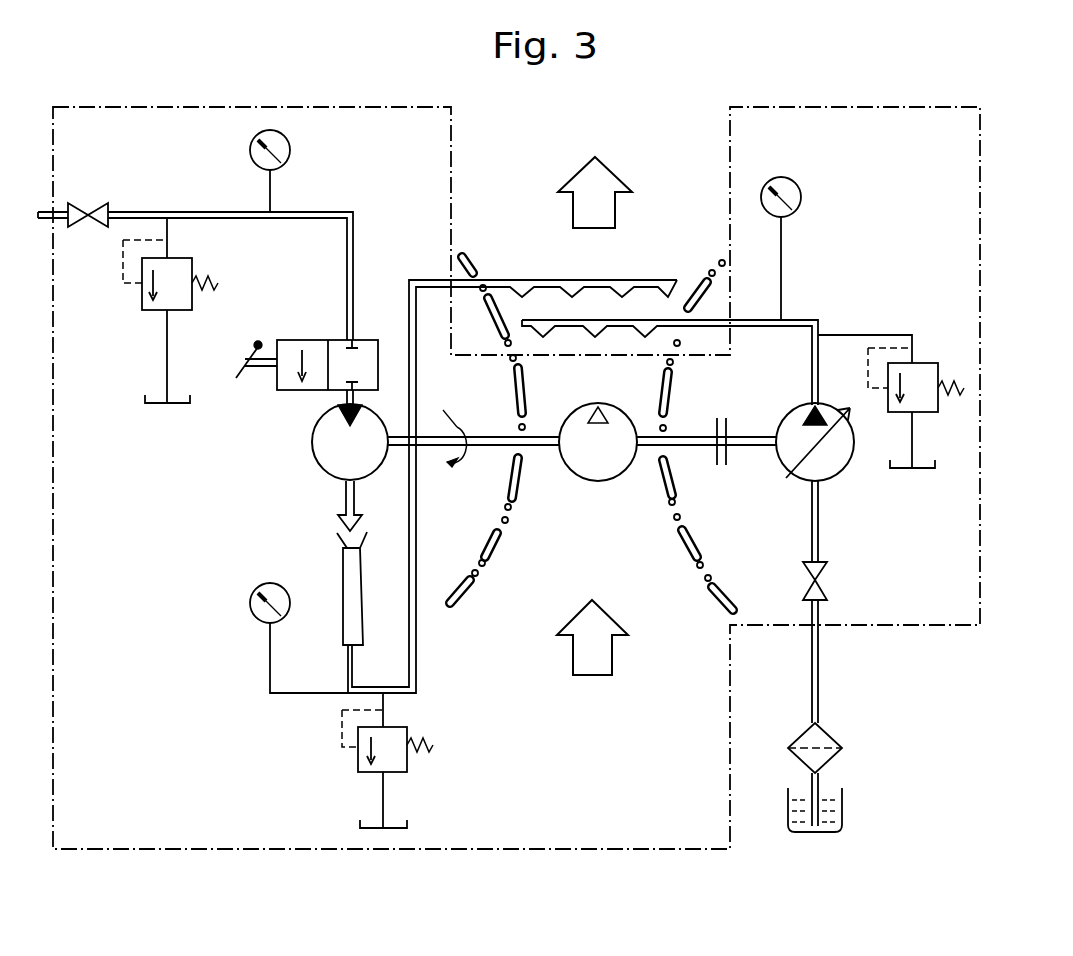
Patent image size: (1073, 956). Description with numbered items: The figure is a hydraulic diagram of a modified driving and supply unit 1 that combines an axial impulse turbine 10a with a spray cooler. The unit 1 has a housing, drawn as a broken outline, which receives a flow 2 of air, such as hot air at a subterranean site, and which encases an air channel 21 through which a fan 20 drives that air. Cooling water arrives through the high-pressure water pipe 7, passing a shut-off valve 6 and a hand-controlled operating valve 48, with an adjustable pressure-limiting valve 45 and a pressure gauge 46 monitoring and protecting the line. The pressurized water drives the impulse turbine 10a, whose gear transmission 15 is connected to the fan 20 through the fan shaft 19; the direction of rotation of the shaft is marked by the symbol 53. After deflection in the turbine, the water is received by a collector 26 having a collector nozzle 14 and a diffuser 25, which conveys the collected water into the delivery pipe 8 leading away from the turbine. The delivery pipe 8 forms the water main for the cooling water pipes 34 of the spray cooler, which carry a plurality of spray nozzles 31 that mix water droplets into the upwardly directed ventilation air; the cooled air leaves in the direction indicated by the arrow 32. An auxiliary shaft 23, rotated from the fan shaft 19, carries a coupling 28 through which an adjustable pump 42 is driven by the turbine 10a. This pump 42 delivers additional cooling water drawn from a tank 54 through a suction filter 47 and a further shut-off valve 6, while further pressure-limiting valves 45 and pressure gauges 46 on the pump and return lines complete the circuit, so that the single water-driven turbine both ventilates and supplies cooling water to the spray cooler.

The driving and supply unit 1 is at (450, 152).
The flow of air 2 is at (598, 663).
The shut-off valve 6 is at (100, 204).
The high-pressure water pipe 7 is at (50, 212).
The delivery pipe 8 is at (417, 652).
The impulse turbine 10a is at (299, 442).
The gear transmission 15 is at (318, 435).
The collector nozzle 14 is at (343, 546).
The fan shaft 19 is at (498, 440).
The fan 20 is at (580, 462).
The air channel 21 is at (677, 485).
The auxiliary shaft 23 is at (677, 440).
The diffuser 25 is at (346, 619).
The collector 26 is at (345, 535).
The coupling 28 is at (726, 420).
The spray nozzles 31 is at (531, 335).
The arrow indicating cooled air exit direction 32 is at (600, 180).
The cooling water pipes 34 is at (507, 282).
The adjustable pump 42 is at (833, 480).
The adjustable pressure-limiting valve 45 is at (146, 298).
The pressure gauge 46 is at (258, 151).
The suction filter 47 is at (816, 737).
The hand-controlled operating valve 48 is at (318, 338).
The direction of rotation of shafts 53 is at (444, 423).
The tank 54 is at (788, 811).